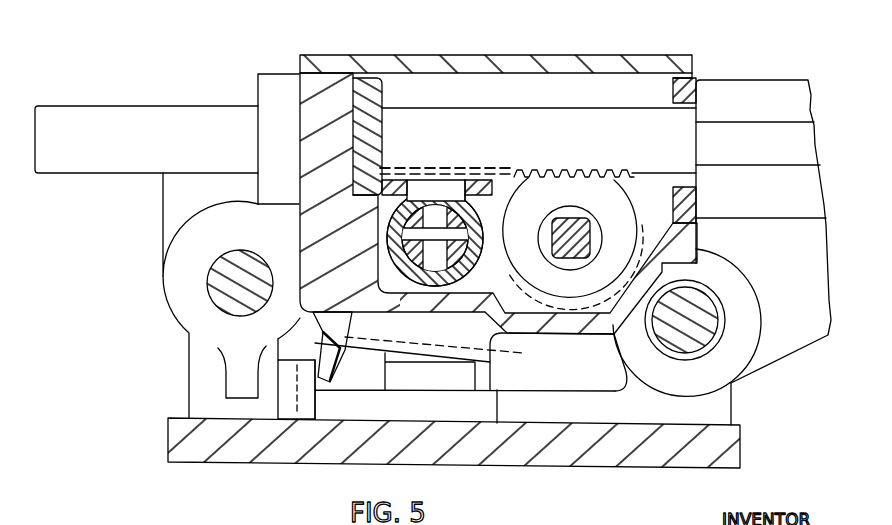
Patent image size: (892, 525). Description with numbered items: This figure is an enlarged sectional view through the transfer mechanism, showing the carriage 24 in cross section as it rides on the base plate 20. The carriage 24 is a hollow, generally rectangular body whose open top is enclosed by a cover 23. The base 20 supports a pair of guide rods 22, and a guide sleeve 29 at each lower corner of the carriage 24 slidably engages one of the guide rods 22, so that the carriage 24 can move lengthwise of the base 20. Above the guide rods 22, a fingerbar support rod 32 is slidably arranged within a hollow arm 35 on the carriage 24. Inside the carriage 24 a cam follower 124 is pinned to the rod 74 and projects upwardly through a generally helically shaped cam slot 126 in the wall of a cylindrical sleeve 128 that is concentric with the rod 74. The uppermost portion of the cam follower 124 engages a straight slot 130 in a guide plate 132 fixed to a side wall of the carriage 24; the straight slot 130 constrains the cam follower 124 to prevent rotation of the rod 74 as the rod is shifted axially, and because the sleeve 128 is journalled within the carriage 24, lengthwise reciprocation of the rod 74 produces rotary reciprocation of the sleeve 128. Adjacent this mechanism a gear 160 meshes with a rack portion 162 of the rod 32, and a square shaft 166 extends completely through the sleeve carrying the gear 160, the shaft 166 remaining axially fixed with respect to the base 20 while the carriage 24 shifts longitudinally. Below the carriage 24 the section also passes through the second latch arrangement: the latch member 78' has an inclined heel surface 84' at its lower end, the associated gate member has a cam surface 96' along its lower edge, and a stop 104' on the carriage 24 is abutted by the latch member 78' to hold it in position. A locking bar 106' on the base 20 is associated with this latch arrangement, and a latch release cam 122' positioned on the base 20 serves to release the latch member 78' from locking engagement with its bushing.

The base plate 20 is at (733, 452).
The guide rods 22 is at (228, 300).
The cover 23 is at (447, 64).
The carriage 24 is at (587, 51).
The guide sleeve 29 is at (185, 313).
The fingerbar support rod 32 is at (95, 152).
The hollow arm 35 is at (765, 87).
The rod 74 is at (408, 258).
The latch member 78' is at (402, 366).
The inclined heel surface 84' is at (321, 347).
The cam surface 96' is at (454, 350).
The stop 104' is at (337, 289).
The locking bar 106' is at (547, 362).
The latch release cam 122' is at (446, 391).
The cam follower 124 is at (426, 189).
The cam slot 126 is at (468, 197).
The cylindrical sleeve 128 is at (463, 265).
The straight slot 130 is at (452, 191).
The guide plate 132 is at (481, 175).
The gear 160 is at (617, 217).
The rack portion 162 is at (620, 178).
The square shaft 166 is at (568, 252).